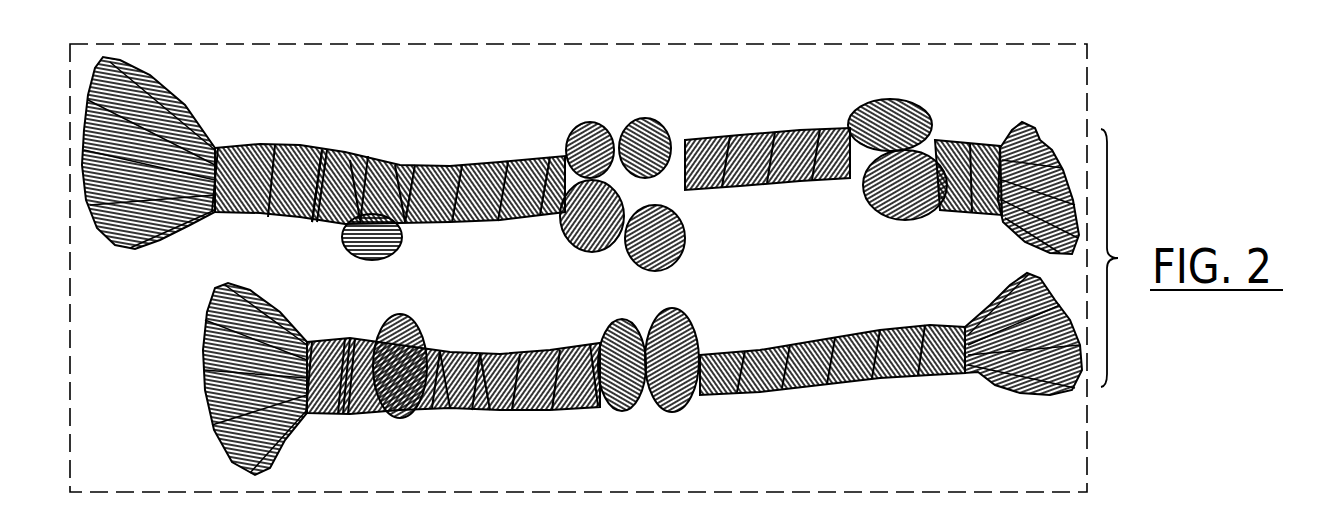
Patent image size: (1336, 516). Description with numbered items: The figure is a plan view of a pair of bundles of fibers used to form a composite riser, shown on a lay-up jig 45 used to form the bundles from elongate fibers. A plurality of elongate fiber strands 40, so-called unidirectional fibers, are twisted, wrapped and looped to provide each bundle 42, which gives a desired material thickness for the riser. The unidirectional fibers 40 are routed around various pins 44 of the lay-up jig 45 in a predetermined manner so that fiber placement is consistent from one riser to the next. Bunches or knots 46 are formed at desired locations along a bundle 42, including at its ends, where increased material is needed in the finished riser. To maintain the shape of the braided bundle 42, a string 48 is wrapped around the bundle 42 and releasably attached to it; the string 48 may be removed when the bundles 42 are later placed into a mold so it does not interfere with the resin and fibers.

The elongate fiber strands 40 is at (288, 148).
The bundle 42 is at (517, 150).
The pins 44 is at (343, 162).
The lay-up jig 45 is at (1060, 103).
The knots 46 is at (177, 101).
The string 48 is at (317, 163).